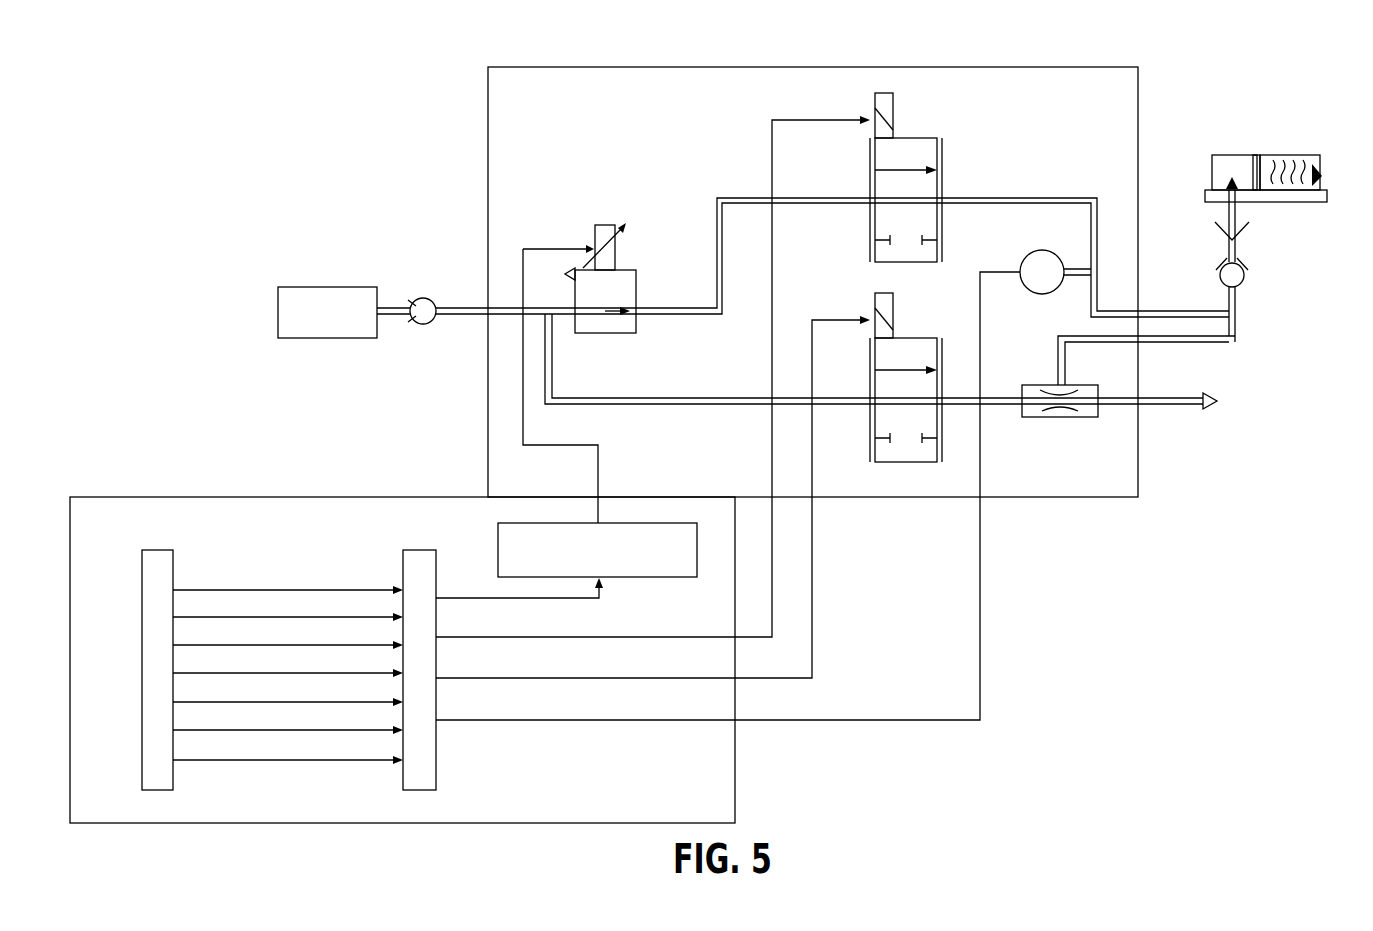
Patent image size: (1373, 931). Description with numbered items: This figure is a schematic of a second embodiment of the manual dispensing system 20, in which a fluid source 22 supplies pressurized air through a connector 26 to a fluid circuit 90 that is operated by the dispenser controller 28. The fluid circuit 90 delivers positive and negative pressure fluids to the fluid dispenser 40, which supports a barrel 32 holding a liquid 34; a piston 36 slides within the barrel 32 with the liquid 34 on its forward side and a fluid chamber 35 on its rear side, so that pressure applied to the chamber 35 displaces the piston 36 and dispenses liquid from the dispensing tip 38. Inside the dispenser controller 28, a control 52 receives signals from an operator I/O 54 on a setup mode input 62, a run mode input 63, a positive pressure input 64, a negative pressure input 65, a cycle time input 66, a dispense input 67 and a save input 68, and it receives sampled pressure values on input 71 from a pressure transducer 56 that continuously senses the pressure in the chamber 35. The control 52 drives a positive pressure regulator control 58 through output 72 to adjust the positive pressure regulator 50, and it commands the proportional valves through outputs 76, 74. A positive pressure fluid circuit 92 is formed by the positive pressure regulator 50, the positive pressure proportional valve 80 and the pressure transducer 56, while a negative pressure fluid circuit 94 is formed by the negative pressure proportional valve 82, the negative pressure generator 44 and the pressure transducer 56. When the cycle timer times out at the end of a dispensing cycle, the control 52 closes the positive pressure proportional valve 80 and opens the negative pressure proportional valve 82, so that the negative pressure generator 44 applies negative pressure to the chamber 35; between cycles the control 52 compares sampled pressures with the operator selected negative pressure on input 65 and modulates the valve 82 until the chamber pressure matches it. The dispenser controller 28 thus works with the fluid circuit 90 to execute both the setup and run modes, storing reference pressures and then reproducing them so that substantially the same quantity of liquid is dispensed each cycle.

The dispensing system 20 is at (155, 133).
The fluid source 22 is at (295, 287).
The connector 26 is at (433, 301).
The dispenser controller 28 is at (402, 660).
The barrel 32 is at (1216, 155).
The liquid 34 is at (1306, 155).
The fluid chamber 35 is at (1210, 173).
The piston 36 is at (1256, 155).
The dispensing tip 38 is at (1325, 173).
The fluid dispenser 40 is at (1283, 206).
The negative pressure generator 44 is at (1085, 416).
The positive pressure regulator 50 is at (638, 290).
The control 52 is at (402, 558).
The operator I/O 54 is at (141, 560).
The pressure transducer 56 is at (1037, 252).
The positive pressure regulator control 58 is at (496, 538).
The setup mode control input 62 is at (370, 588).
The run mode control input 63 is at (362, 615).
The positive pressure control input 64 is at (380, 643).
The negative pressure control input 65 is at (378, 671).
The cycle time control input 66 is at (370, 700).
The dispense control input 67 is at (362, 728).
The save control input 68 is at (357, 758).
The pressure control input 71 is at (446, 721).
The regulator control output 72 is at (446, 599).
The negative valve control output 74 is at (446, 680).
The positive valve control output 76 is at (446, 640).
The positive pressure proportional valve 80 is at (945, 160).
The negative pressure proportional valve 82 is at (943, 370).
The fluid circuit 90 is at (599, 129).
The positive pressure fluid circuit 92 is at (813, 218).
The negative pressure fluid circuit 94 is at (1002, 384).